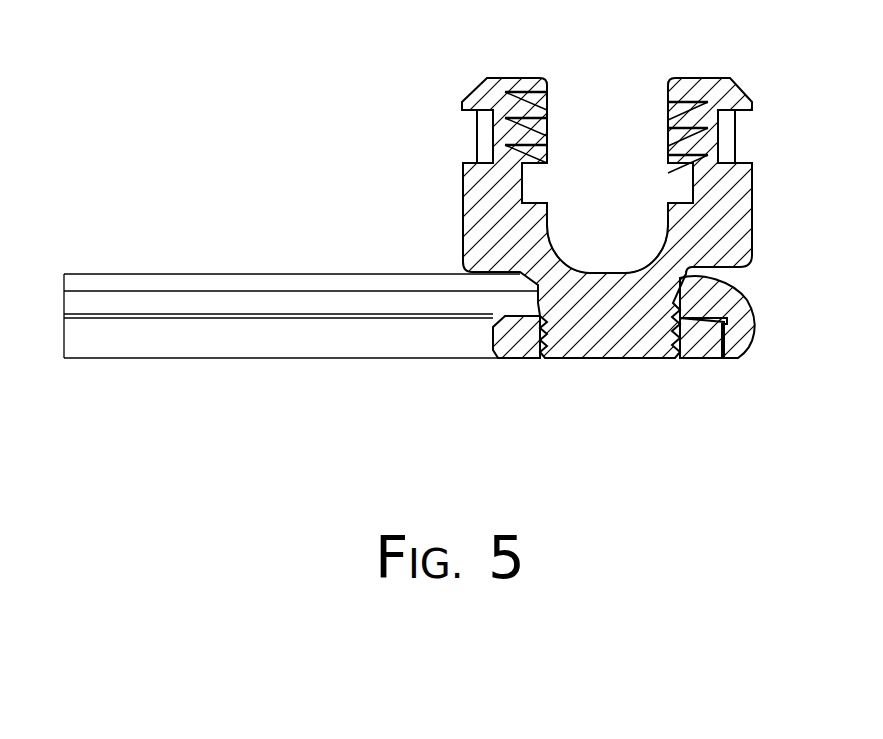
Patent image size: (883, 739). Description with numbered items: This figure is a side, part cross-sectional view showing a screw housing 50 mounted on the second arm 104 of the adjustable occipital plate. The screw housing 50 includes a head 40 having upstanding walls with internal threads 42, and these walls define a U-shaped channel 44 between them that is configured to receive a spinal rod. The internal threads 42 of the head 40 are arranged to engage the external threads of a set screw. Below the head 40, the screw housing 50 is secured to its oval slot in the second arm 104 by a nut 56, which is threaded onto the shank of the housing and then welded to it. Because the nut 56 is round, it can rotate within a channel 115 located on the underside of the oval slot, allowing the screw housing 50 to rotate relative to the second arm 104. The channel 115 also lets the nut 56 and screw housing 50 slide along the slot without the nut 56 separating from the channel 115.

The head 40 is at (557, 197).
The internal threads 42 is at (533, 108).
The U-shaped channel 44 is at (617, 203).
The screw housing 50 is at (609, 197).
The nut 56 is at (698, 352).
The second arm 104 is at (210, 280).
The channel 115 is at (245, 350).